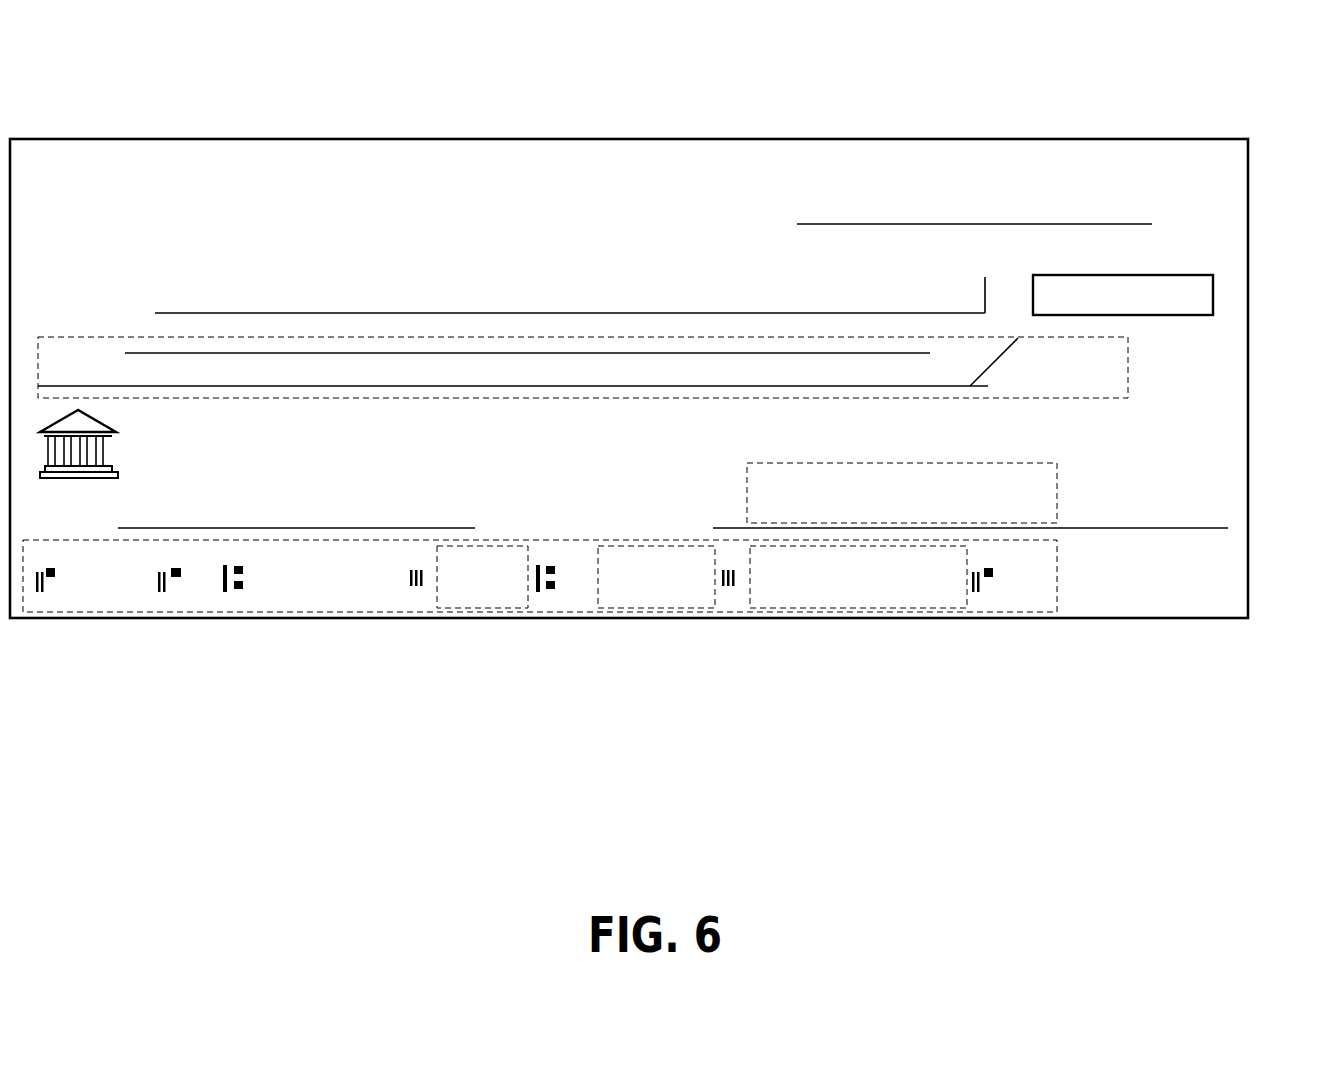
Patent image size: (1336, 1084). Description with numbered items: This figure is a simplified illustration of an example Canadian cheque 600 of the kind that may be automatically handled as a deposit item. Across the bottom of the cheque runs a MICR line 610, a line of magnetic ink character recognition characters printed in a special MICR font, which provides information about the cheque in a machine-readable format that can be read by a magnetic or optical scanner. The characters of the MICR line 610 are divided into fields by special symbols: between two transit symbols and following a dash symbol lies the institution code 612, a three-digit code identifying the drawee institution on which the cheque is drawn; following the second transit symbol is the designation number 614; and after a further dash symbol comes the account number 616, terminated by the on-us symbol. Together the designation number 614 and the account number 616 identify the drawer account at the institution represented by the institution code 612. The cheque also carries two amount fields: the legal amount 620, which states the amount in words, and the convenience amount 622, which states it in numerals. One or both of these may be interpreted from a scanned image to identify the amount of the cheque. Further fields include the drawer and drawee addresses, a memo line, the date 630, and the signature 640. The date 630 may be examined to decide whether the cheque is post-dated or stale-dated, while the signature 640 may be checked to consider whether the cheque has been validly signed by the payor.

The example Canadian cheque 600 is at (462, 164).
The MICR line 610 is at (1027, 586).
The institution code 612 is at (495, 593).
The designation number 614 is at (653, 593).
The account number 616 is at (833, 593).
The legal amount 620 is at (1033, 392).
The convenience amount 622 is at (1175, 290).
The date 630 is at (983, 184).
The signature 640 is at (1033, 478).